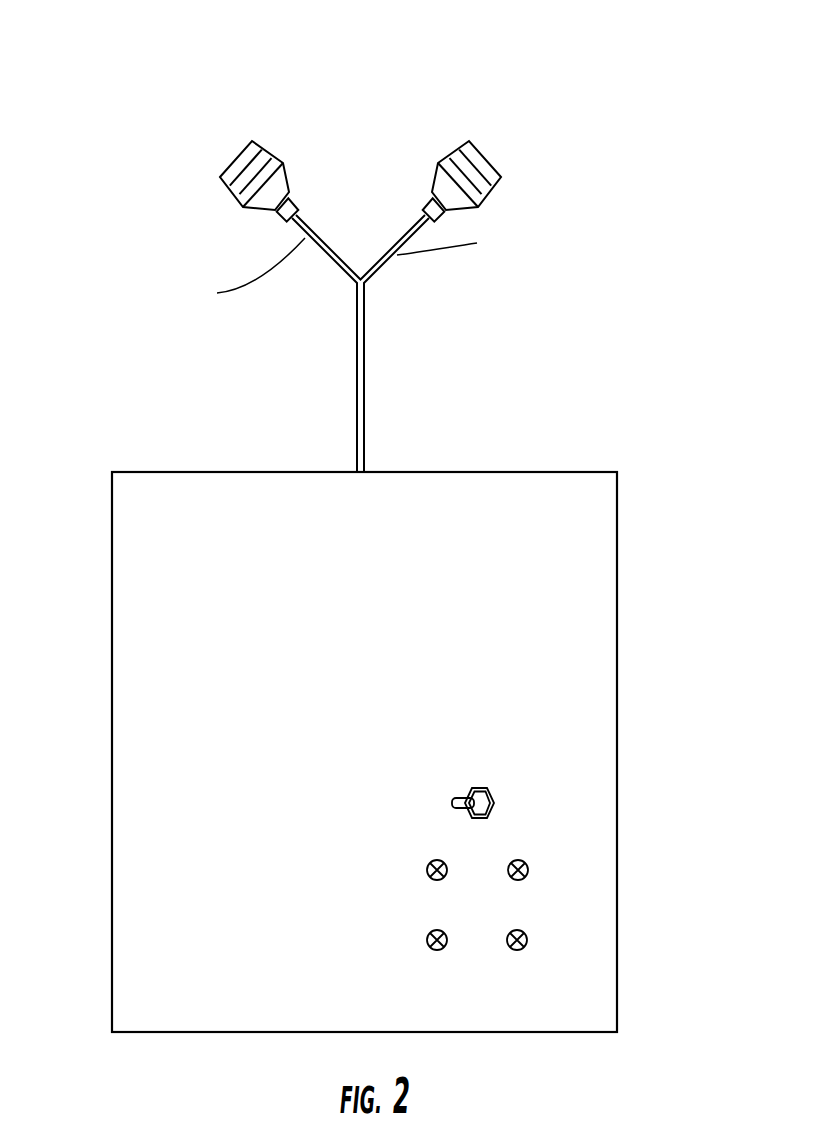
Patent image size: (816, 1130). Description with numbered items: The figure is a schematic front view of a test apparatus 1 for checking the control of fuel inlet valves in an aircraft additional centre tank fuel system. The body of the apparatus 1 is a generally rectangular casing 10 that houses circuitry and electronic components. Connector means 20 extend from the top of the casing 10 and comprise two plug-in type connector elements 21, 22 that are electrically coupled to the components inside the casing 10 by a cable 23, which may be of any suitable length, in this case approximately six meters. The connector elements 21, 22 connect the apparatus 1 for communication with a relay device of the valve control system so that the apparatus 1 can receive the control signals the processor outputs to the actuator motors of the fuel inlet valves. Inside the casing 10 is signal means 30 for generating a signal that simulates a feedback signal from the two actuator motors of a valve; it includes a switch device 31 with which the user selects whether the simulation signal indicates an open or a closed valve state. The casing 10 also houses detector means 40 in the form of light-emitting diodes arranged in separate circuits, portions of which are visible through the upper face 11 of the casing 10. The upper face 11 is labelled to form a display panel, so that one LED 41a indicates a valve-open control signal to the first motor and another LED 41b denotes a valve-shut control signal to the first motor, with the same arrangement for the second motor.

The apparatus 1 is at (652, 85).
The casing 10 is at (633, 982).
The upper face 11 is at (138, 920).
The connector means 20 is at (398, 110).
The connector element 21 is at (240, 177).
The connector element 22 is at (473, 177).
The cable 23 is at (364, 383).
The signal means 30 is at (545, 752).
The switch device 31 is at (473, 790).
The detector means 40 is at (533, 963).
The LED 41a is at (430, 865).
The LED 41b is at (530, 868).